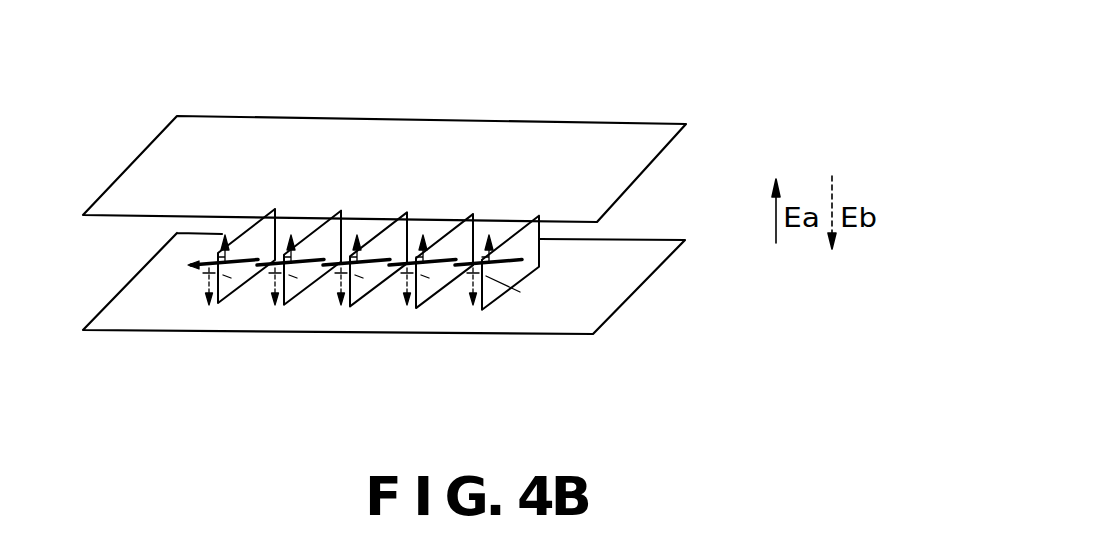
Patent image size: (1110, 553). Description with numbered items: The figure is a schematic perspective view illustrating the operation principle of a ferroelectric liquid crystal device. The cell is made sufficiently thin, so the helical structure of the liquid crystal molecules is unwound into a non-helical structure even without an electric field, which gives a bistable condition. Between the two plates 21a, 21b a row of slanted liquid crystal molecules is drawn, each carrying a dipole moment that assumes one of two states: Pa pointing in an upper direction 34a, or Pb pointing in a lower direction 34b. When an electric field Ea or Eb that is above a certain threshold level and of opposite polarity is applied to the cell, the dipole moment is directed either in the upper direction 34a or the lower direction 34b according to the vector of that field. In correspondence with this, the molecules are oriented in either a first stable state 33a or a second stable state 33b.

The upper electrode plate 21a is at (641, 123).
The lower electrode plate 21b is at (625, 288).
The first stable state 33a is at (247, 257).
The second stable state 33b is at (220, 277).
The upper direction 34a is at (216, 236).
The lower direction 34b is at (205, 273).